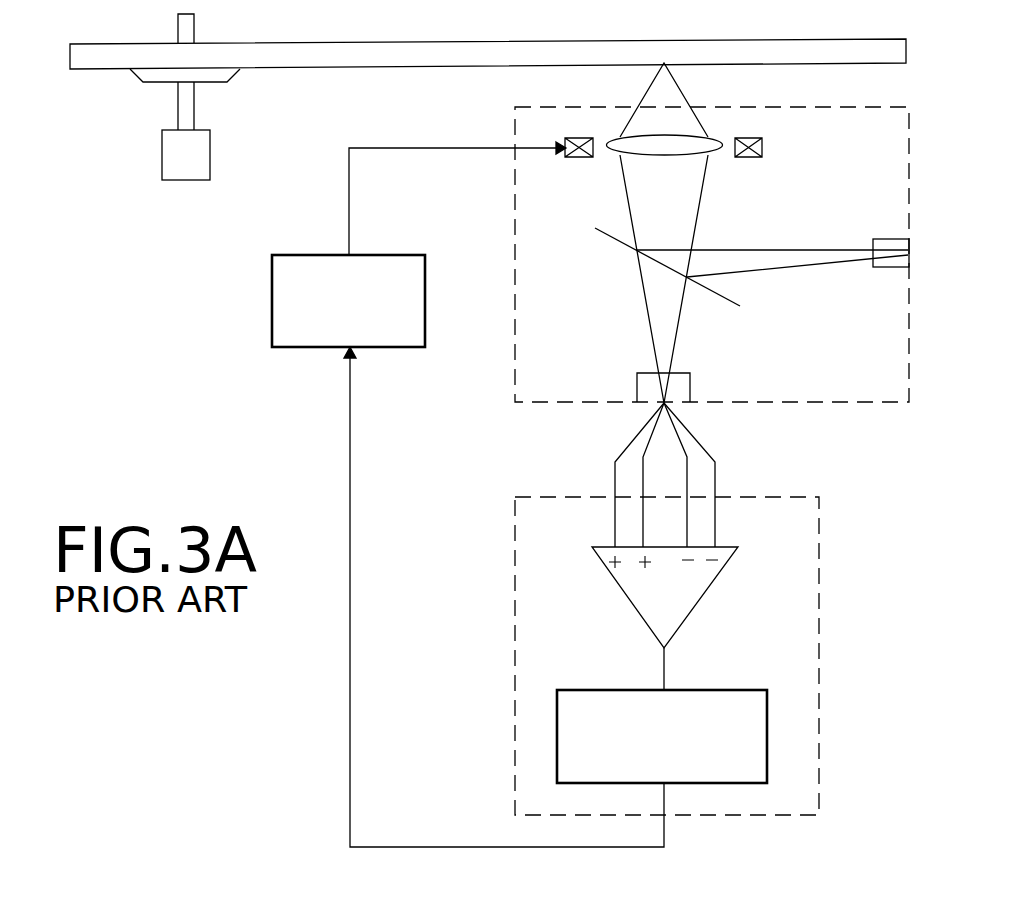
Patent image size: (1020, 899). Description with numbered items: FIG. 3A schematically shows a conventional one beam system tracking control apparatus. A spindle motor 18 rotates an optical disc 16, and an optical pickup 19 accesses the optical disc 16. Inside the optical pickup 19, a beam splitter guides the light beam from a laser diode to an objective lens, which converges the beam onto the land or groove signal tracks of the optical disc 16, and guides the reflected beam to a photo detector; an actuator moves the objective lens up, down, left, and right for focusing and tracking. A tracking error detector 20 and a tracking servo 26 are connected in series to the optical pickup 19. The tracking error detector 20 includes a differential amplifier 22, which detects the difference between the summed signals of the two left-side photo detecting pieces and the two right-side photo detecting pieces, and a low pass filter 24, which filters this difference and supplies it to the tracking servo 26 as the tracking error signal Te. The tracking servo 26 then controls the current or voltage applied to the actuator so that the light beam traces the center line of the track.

The optical disc 16 is at (838, 34).
The spindle motor 18 is at (210, 143).
The optical pickup 19 is at (883, 101).
The tracking error detector 20 is at (667, 609).
The differential amplifier 22 is at (765, 535).
The low pass filter 24 is at (767, 705).
The tracking servo 26 is at (425, 252).